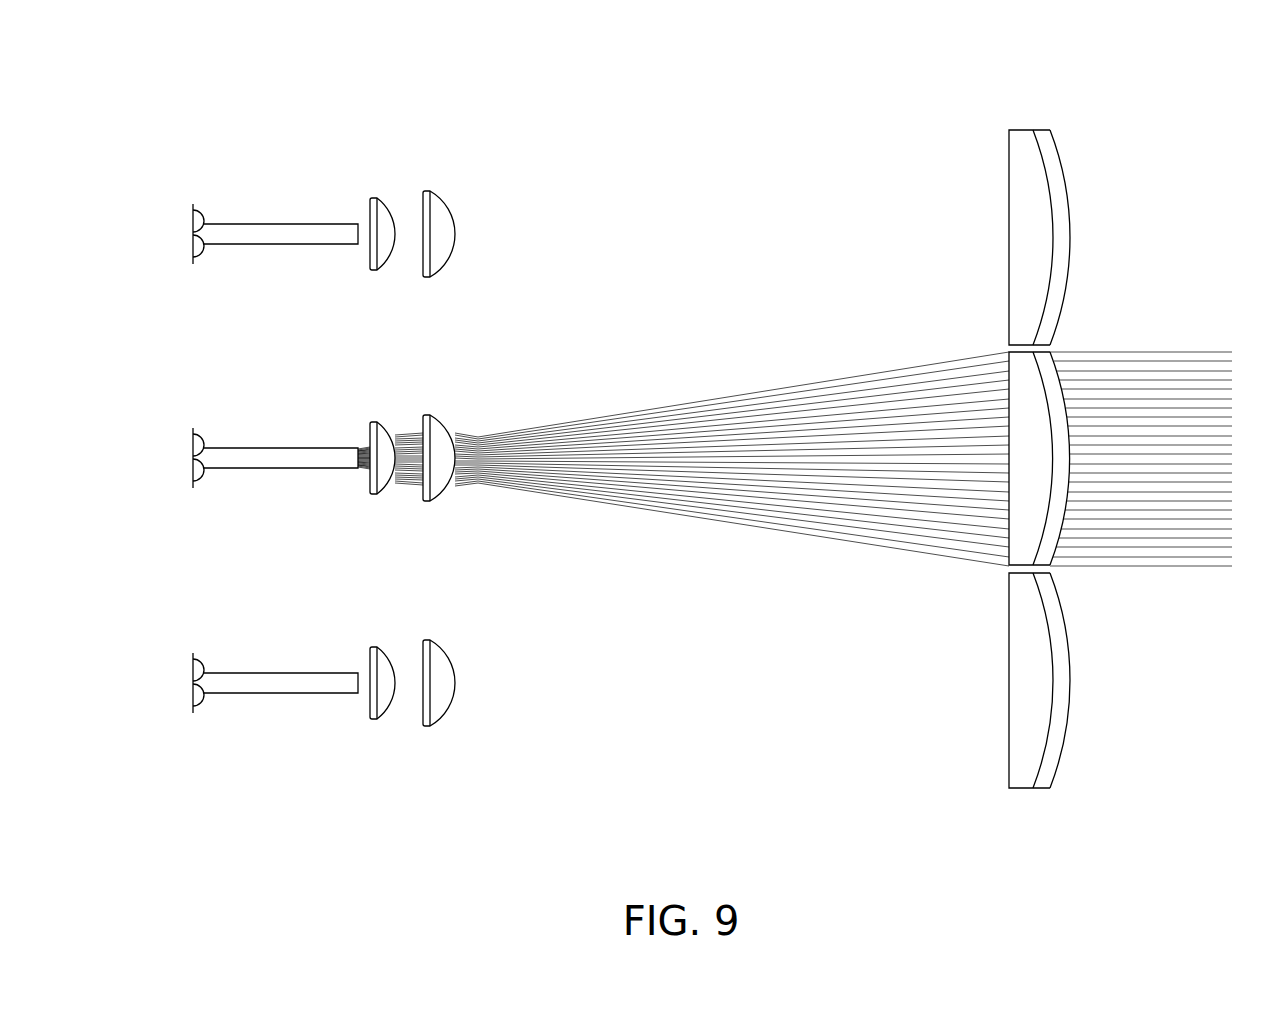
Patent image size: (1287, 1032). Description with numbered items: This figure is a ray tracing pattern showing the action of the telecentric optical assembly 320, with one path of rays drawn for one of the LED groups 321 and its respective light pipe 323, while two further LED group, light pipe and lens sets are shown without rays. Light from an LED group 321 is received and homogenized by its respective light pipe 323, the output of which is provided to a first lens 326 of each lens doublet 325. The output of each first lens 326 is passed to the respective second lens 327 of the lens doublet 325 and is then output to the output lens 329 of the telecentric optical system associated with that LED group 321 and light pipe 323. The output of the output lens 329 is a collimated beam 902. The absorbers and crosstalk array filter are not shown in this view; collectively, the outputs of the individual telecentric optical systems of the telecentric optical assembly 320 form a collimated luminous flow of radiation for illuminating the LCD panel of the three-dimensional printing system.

The telecentric optical assembly 320 is at (365, 92).
The LED group 321 is at (198, 726).
The light pipe 323 is at (257, 677).
The lens doublet 325 is at (335, 833).
The first lens 326 is at (385, 717).
The second lens 327 is at (437, 718).
The output lens 329 is at (1019, 782).
The collimated beam 902 is at (1193, 556).